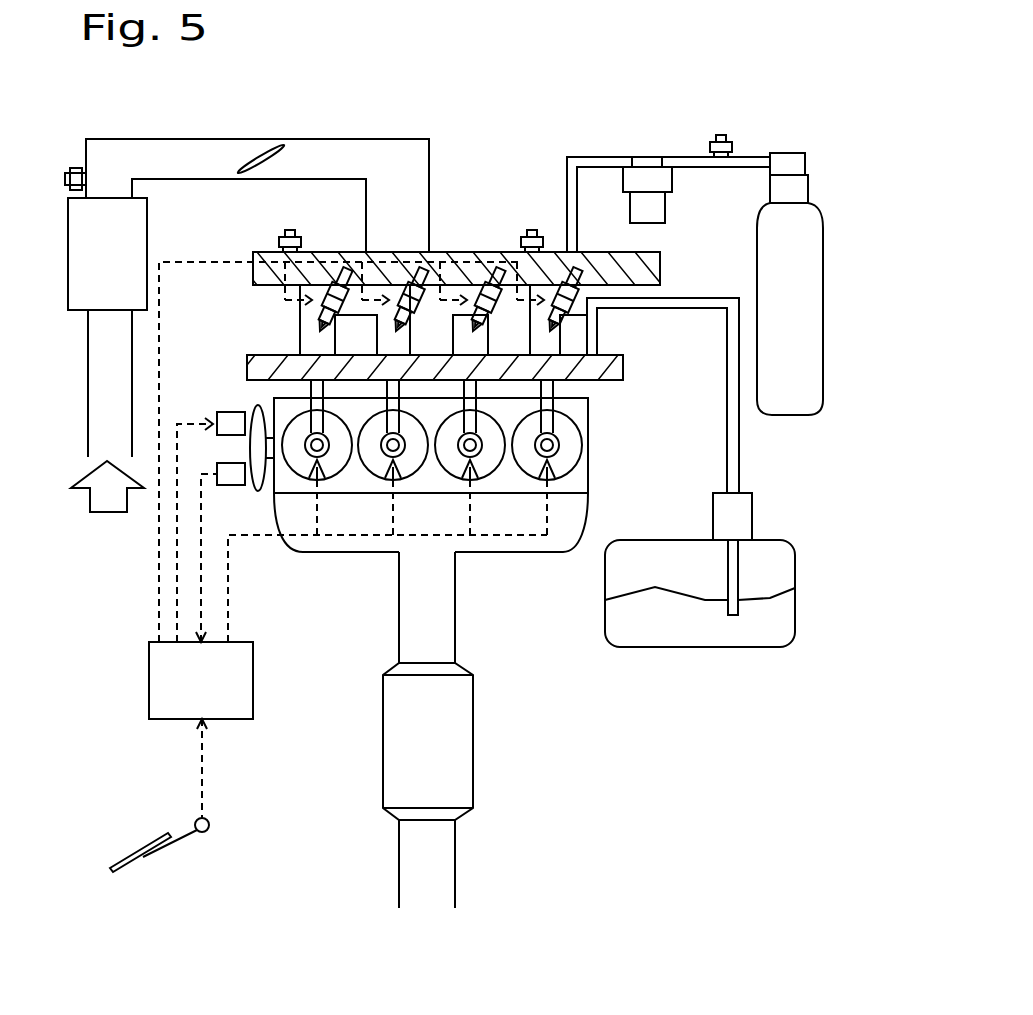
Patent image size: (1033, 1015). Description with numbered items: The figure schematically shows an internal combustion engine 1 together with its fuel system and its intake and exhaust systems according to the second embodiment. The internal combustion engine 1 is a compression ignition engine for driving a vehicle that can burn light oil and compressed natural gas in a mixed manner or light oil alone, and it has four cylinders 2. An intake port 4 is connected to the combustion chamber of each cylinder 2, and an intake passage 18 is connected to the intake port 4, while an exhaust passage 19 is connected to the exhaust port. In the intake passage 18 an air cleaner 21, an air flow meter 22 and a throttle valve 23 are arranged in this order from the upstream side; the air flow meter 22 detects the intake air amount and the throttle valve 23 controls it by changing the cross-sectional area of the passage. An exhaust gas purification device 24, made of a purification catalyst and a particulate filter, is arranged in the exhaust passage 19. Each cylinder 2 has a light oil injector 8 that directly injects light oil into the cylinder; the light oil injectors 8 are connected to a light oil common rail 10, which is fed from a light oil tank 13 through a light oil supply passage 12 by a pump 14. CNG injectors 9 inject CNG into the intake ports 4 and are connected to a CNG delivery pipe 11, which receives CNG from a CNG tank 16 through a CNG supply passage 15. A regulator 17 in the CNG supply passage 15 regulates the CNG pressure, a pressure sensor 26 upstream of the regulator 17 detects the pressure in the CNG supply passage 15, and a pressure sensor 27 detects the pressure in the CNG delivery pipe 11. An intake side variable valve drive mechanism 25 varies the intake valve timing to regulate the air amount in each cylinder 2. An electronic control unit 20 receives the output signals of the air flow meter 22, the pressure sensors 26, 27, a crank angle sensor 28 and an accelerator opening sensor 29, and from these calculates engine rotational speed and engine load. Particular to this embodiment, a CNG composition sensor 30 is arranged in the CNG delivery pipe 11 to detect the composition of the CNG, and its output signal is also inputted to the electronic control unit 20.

The internal combustion engine 1 is at (590, 478).
The cylinder 2 is at (588, 408).
The intake port 4 is at (300, 330).
The light oil injector 8 is at (565, 437).
The CNG injector 9 is at (560, 315).
The light oil common rail 10 is at (623, 365).
The CNG delivery pipe 11 is at (660, 264).
The light oil supply passage 12 is at (727, 420).
The light oil tank 13 is at (680, 648).
The pump 14 is at (745, 493).
The CNG supply passage 15 is at (590, 157).
The CNG tank 16 is at (823, 270).
The regulator 17 is at (672, 182).
The intake passage 18 is at (333, 139).
The exhaust passage 19 is at (455, 617).
The electronic control unit 20 is at (149, 680).
The air cleaner 21 is at (68, 252).
The air flow meter 22 is at (78, 168).
The throttle valve 23 is at (262, 145).
The exhaust gas purification device 24 is at (383, 722).
The intake side variable valve drive mechanism 25 is at (228, 412).
The pressure sensor 26 is at (721, 135).
The pressure sensor 27 is at (290, 236).
The crank angle sensor 28 is at (228, 485).
The accelerator opening sensor 29 is at (209, 825).
The CNG composition sensor 30 is at (532, 230).